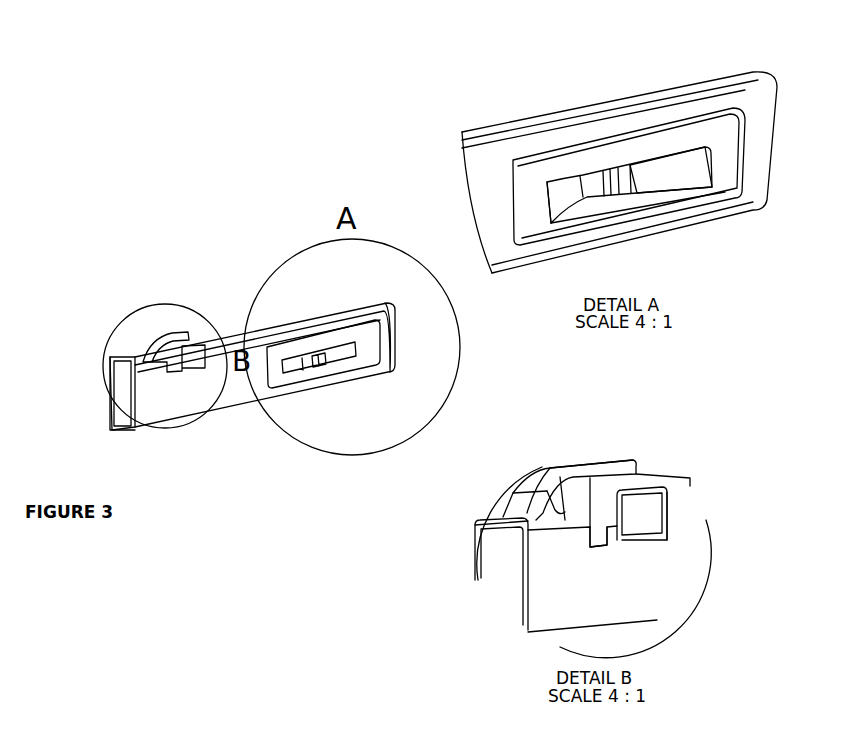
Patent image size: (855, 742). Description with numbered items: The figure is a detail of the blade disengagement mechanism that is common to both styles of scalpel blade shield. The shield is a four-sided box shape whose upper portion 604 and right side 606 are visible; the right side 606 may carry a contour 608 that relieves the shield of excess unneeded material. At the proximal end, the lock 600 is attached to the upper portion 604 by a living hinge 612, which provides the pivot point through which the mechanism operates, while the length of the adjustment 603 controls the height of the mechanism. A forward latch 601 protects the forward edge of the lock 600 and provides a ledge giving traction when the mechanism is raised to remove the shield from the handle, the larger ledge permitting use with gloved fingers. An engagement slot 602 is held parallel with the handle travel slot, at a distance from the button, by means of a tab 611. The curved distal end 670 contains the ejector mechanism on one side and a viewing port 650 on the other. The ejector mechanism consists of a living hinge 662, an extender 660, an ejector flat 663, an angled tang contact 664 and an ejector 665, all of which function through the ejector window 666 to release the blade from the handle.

The lock 600 is at (588, 452).
The forward latch 601 is at (655, 479).
The engagement slot 602 is at (600, 533).
The adjustment 603 is at (145, 340).
The upper portion 604 is at (260, 353).
The right side 606 is at (223, 325).
The contour 608 is at (673, 538).
The tab 611 is at (580, 500).
The living hinge 612 is at (527, 515).
The viewing port 650 is at (272, 375).
The extender 660 is at (566, 193).
The living hinge 662 is at (540, 192).
The ejector flat 663 is at (593, 183).
The angled tang contact 664 is at (617, 173).
The ejector 665 is at (672, 173).
The ejector window 666 is at (607, 203).
The distal end 670 is at (400, 333).